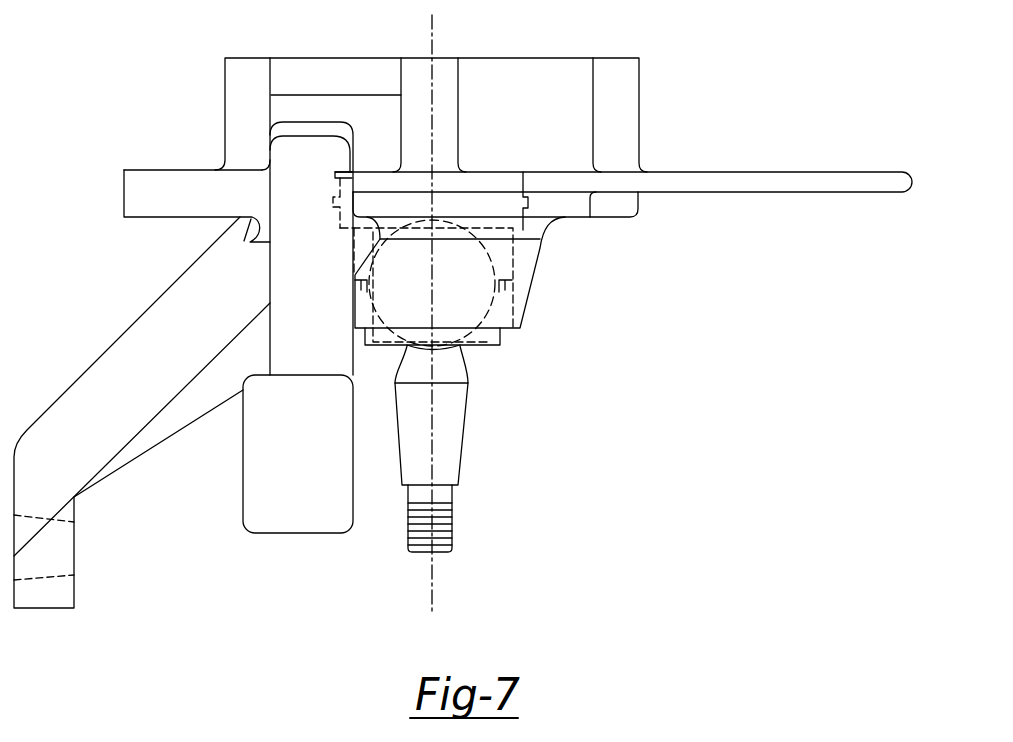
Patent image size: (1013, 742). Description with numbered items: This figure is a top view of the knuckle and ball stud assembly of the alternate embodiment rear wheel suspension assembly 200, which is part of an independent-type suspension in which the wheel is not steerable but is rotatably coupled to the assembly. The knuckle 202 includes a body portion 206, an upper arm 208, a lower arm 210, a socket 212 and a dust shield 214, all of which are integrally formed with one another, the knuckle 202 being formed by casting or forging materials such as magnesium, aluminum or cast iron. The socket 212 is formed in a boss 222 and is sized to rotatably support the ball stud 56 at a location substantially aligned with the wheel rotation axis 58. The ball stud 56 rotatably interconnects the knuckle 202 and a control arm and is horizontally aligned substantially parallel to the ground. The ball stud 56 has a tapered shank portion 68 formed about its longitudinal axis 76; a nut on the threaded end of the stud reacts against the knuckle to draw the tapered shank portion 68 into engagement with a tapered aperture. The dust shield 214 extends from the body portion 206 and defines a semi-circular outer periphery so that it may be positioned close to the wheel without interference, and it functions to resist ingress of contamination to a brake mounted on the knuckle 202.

The ball stud 56 is at (485, 460).
The wheel rotation axis 58 is at (432, 575).
The tapered shank portion 68 is at (458, 457).
The longitudinal axis 76 is at (432, 588).
The rear wheel suspension assembly 200 is at (524, 373).
The knuckle 202 is at (463, 317).
The body portion 206 is at (630, 90).
The upper arm 208 is at (340, 363).
The lower arm 210 is at (33, 450).
The socket 212 is at (373, 312).
The dust shield 214 is at (777, 187).
The boss 222 is at (525, 265).